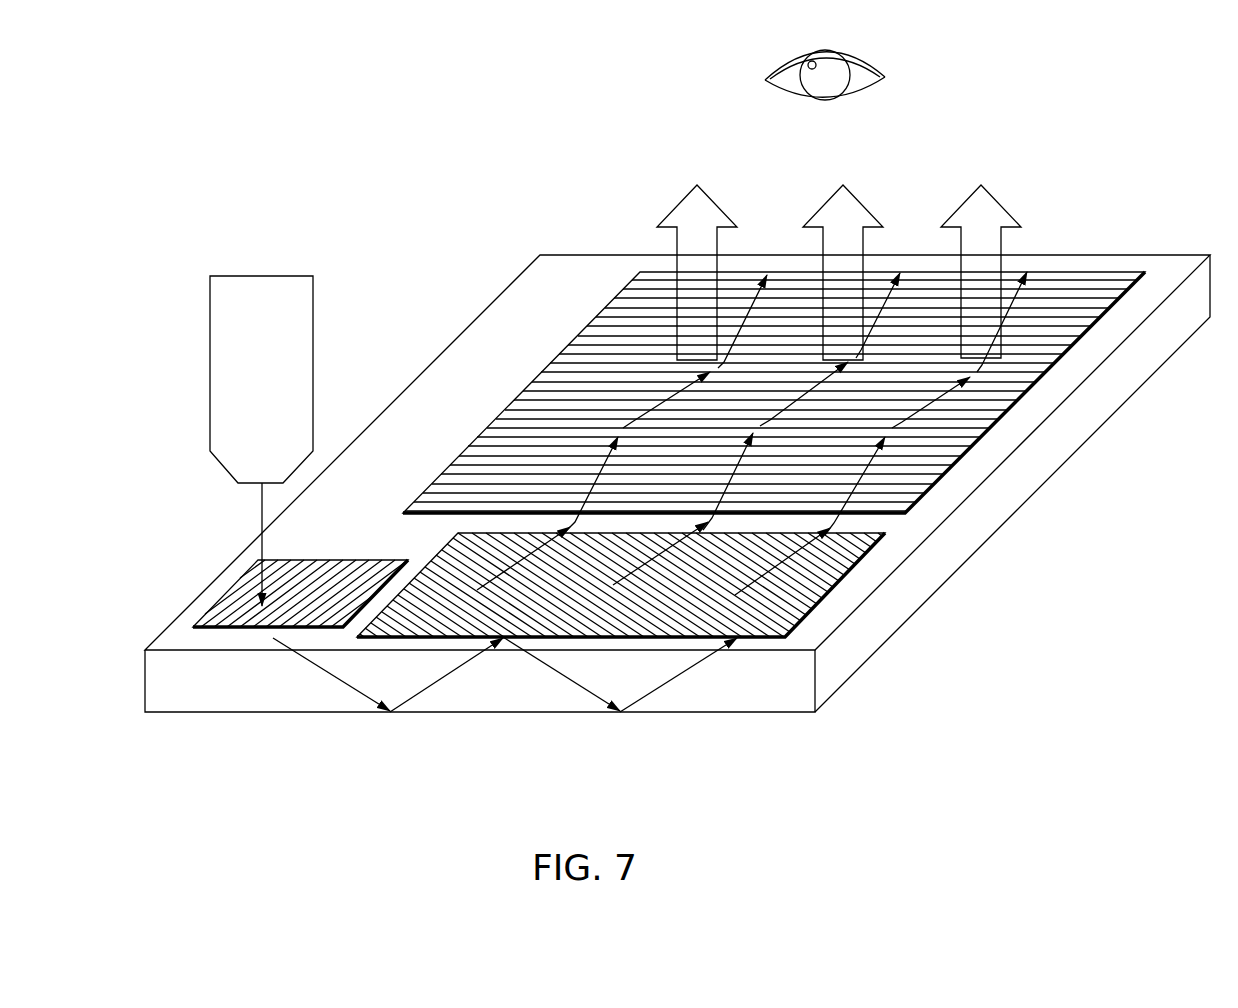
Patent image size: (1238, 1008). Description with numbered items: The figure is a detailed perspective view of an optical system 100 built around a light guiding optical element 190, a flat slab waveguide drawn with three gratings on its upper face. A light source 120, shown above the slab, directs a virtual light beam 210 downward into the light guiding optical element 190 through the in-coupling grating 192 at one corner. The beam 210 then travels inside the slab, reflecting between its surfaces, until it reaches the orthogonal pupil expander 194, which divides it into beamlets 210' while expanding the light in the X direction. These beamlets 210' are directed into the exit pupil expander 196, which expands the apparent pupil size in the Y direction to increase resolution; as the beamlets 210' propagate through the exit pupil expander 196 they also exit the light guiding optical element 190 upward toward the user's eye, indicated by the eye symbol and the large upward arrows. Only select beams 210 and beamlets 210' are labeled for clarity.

The optical system 100 is at (414, 181).
The light source 120 is at (218, 340).
The light guiding optical element 190 is at (433, 351).
The in-coupling grating 192 is at (230, 613).
The orthogonal pupil expander 194 is at (767, 607).
The exit pupil expander 196 is at (1110, 282).
The virtual light beam 210 is at (458, 629).
The beamlets 210' is at (810, 408).